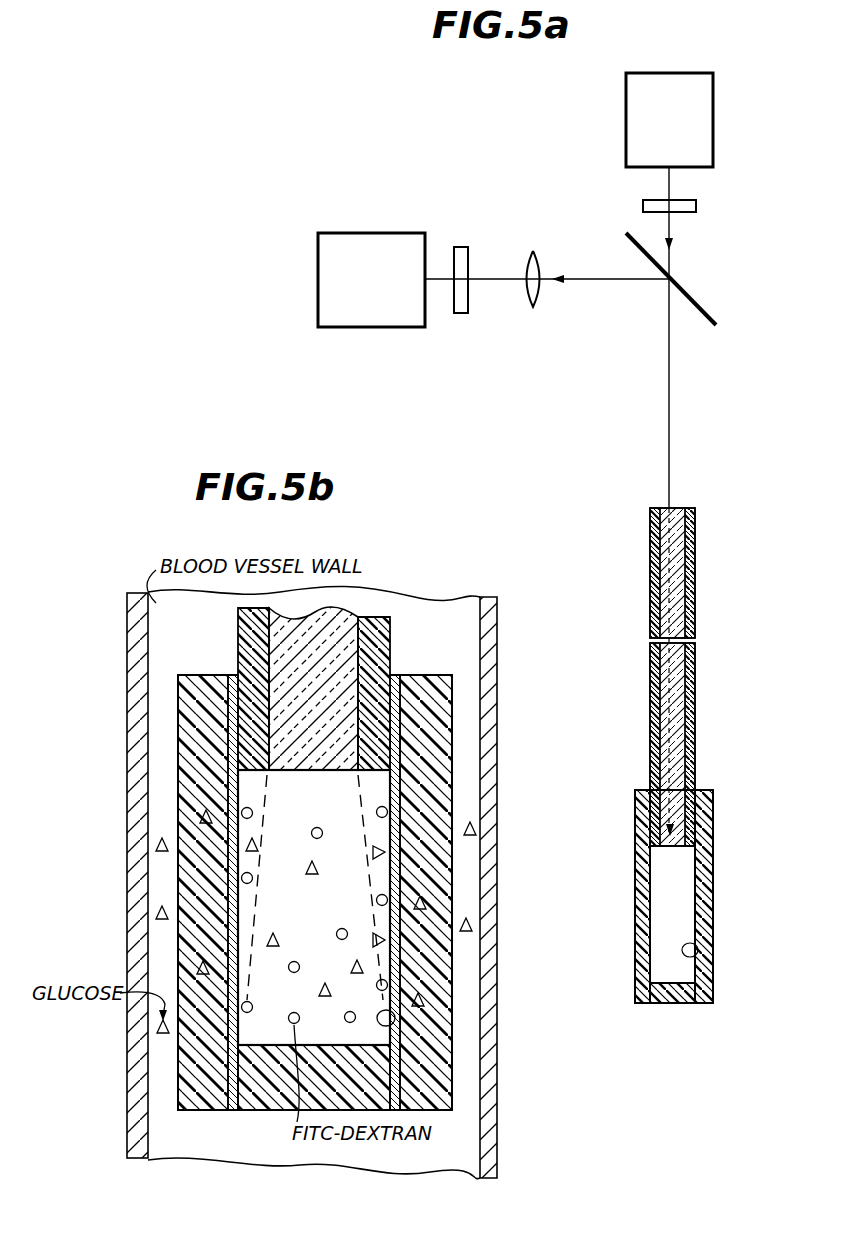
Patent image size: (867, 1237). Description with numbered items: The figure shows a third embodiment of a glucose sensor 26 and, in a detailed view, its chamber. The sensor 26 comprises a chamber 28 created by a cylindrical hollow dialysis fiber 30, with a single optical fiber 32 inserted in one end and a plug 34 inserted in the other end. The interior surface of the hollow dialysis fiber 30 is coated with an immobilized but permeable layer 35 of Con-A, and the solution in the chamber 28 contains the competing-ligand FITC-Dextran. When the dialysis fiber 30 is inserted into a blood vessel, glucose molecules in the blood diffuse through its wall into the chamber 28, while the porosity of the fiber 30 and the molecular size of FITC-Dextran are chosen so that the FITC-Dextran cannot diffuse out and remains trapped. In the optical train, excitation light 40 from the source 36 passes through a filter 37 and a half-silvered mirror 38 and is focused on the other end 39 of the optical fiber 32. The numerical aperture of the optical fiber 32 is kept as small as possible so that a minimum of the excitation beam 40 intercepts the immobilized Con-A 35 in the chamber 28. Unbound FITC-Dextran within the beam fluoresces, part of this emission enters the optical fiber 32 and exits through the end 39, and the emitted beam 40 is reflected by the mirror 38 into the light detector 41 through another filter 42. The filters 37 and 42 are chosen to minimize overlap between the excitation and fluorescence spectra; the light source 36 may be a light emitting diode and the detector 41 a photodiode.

In FIG. 5A, the sensor 26 is at (604, 594).
In FIG. 5A, the chamber 28 is at (677, 876).
In FIG. 5B, the chamber 28 is at (323, 800).
In FIG. 5A, the cylindrical hollow dialysis fiber 30 is at (640, 968).
In FIG. 5B, the cylindrical hollow dialysis fiber 30 is at (433, 860).
In FIG. 5A, the optical fiber 32 is at (678, 678).
In FIG. 5B, the optical fiber 32 is at (383, 630).
In FIG. 5A, the plug 34 is at (676, 1003).
In FIG. 5B, the plug 34 is at (257, 1103).
In FIG. 5A, the immobilized permeable layer of Con-A 35 is at (698, 956).
In FIG. 5B, the immobilized permeable layer of Con-A 35 is at (394, 1028).
In FIG. 5A, the light source 36 is at (710, 128).
In FIG. 5A, the filter 37 is at (697, 206).
In FIG. 5A, the half-silvered mirror 38 is at (693, 298).
In FIG. 5A, the other end of the optical fiber 39 is at (680, 508).
In FIG. 5A, the excitation light 40 is at (670, 402).
In FIG. 5B, the excitation light 40 is at (258, 903).
In FIG. 5A, the light detector 41 is at (319, 262).
In FIG. 5A, the filter 42 is at (461, 250).